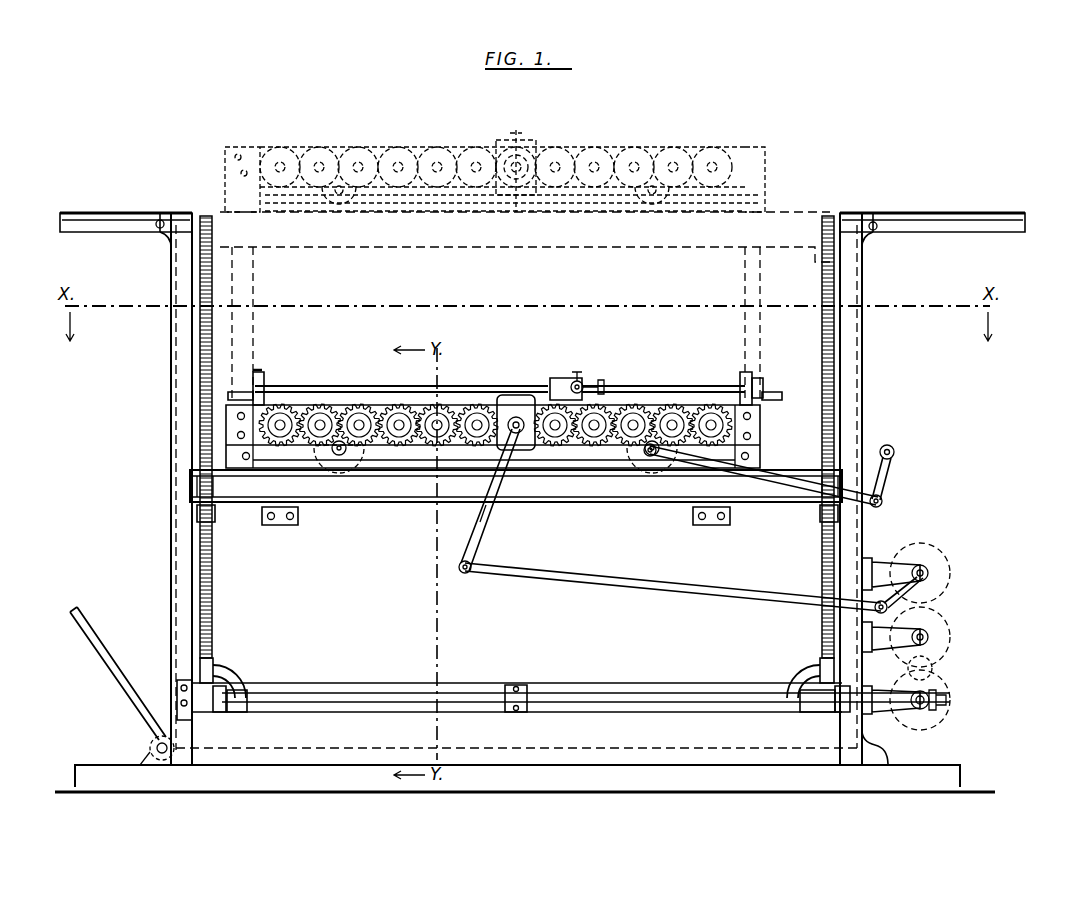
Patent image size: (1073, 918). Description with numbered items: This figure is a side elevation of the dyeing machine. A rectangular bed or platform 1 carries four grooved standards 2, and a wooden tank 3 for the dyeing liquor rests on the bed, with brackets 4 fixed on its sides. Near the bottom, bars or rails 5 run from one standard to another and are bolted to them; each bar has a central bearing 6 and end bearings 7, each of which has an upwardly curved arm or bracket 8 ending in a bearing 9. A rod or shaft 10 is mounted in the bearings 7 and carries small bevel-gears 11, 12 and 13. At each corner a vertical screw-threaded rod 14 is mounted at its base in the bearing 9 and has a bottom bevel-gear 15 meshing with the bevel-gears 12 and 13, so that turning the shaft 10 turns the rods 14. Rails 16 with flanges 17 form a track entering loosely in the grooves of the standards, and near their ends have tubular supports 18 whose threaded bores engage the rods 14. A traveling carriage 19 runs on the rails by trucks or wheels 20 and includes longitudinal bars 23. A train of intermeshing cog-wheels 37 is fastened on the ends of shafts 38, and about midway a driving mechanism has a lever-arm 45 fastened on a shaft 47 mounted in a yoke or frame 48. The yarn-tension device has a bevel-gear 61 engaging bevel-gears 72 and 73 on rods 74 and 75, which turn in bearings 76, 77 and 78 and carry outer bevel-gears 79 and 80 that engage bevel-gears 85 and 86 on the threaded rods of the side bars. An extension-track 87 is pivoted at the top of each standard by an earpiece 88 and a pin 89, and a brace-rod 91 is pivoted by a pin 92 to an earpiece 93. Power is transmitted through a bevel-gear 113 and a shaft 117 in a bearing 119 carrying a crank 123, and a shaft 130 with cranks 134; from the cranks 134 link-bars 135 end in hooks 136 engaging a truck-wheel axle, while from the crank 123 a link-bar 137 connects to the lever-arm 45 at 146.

The bed or platform 1 is at (945, 770).
The standards 2 is at (171, 568).
The tank 3 is at (516, 481).
The brackets 4 is at (496, 519).
The bars or rails 5 is at (618, 683).
The central bearing 6 is at (516, 686).
The bearing 7 is at (240, 712).
The arm or bracket 8 is at (516, 675).
The bearing 9 is at (213, 660).
The rod or shaft 10 is at (652, 704).
The bevel-gear 11 is at (935, 708).
The bevel-gear 12 is at (838, 700).
The bevel-gear 13 is at (221, 712).
The screw-threaded rod 14 is at (228, 570).
The bevel-gear 15 is at (180, 685).
The rails 16 is at (493, 450).
The flanges 17 is at (368, 503).
The tubular portion or support 18 is at (216, 520).
The traveling frame or carriage 19 is at (748, 427).
The trucks or wheels 20 is at (341, 463).
The longitudinal bars 23 is at (458, 457).
The cog-wheels 37 is at (495, 416).
The shafts 38 is at (399, 430).
The lever-arm 45 is at (483, 530).
The shaft 47 is at (524, 440).
The yoke or frame 48 is at (503, 395).
The bevel-gear 61 is at (577, 380).
The bevel-gear 72 is at (575, 378).
The bevel-gear 73 is at (592, 383).
The rod 74 is at (401, 376).
The rod 75 is at (663, 376).
The bearing 76 is at (266, 380).
The bearing 77 is at (556, 385).
The bearing 78 is at (740, 378).
The bevel-gear 79 is at (258, 372).
The bevel-gear 80 is at (762, 382).
The bevel-gear 85 is at (240, 378).
The bevel-gear 86 is at (764, 396).
The extension-track 87 is at (75, 250).
The earpiece 88 is at (163, 236).
The pin 89 is at (160, 220).
The brace-rod 91 is at (118, 673).
The pin 92 is at (150, 745).
The earpiece 93 is at (140, 760).
The bevel-gear 113 is at (925, 710).
The shaft 117 is at (927, 568).
The bearing 119 is at (885, 562).
The crank 123 is at (889, 606).
The shaft 130 is at (895, 450).
The cranks 134 is at (884, 482).
The arm or link-bar 135 is at (790, 462).
The hook 136 is at (648, 458).
The arm or link-bar 137 is at (673, 588).
The pivotal connection 146 is at (465, 574).